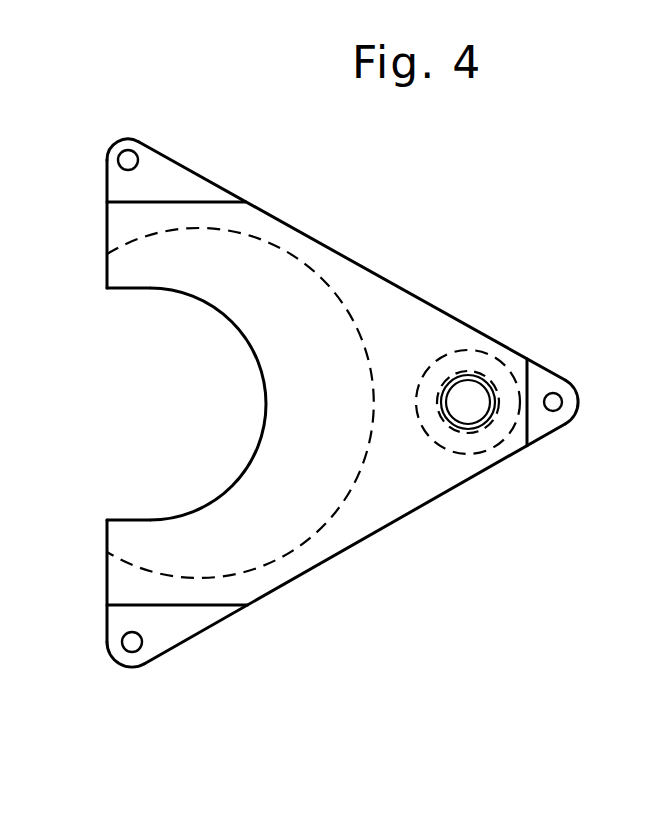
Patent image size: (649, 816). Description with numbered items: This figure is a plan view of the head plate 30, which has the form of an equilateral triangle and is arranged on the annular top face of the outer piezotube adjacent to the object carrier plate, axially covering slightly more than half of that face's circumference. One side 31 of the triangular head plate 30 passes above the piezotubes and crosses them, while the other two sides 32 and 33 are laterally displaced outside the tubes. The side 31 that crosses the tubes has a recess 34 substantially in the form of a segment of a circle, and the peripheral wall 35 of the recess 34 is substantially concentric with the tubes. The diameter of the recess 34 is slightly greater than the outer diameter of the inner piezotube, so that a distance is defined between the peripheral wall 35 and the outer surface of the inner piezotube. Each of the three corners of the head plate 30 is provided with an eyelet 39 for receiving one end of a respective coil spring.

The head plate 30 is at (357, 399).
The side of the triangular head plate 31 is at (108, 554).
The side of the triangular head plate 32 is at (317, 238).
The side of the triangular head plate 33 is at (387, 526).
The recess 34 is at (176, 404).
The peripheral wall of recess 35 is at (265, 372).
The eyelet 39 is at (145, 150).